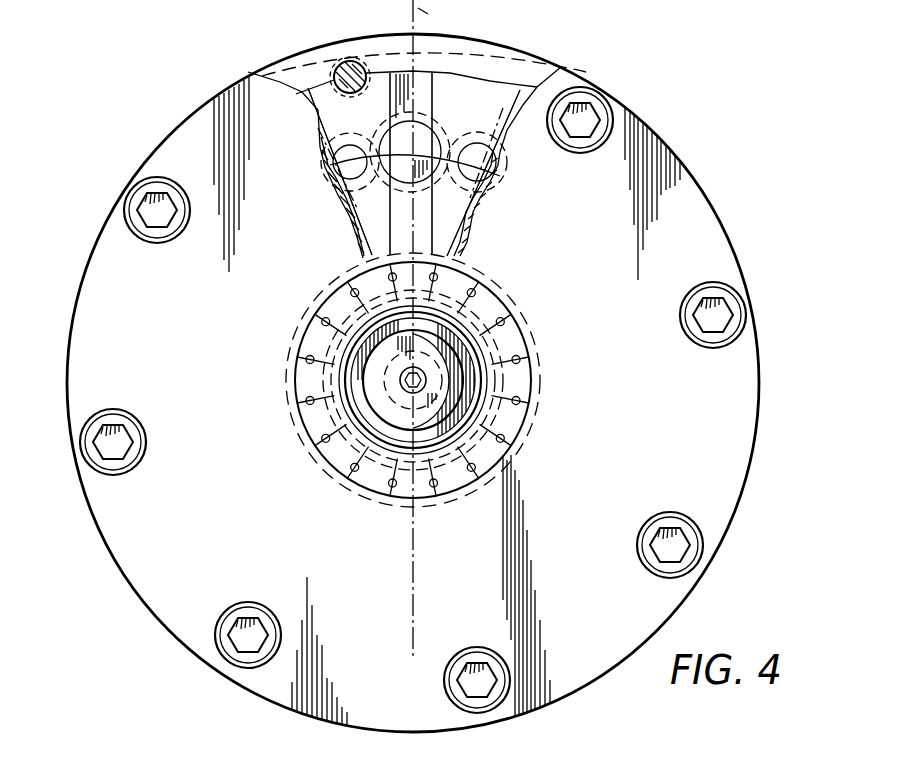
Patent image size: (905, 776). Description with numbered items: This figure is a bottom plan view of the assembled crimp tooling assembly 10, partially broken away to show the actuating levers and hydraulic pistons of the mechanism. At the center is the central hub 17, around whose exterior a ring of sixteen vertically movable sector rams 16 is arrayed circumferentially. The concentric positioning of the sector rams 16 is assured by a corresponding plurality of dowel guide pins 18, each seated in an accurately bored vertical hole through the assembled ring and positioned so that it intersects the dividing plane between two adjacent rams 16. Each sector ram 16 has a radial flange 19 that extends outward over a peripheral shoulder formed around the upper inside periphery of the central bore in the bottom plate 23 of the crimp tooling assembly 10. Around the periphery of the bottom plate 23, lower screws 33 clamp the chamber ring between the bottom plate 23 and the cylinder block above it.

The crimp tooling assembly 10 is at (705, 189).
The sector rams 16 is at (488, 292).
The central hub 17 is at (470, 372).
The dowel guide pins 18 is at (522, 396).
The radial flange 19 is at (362, 246).
The bottom plate 23 is at (233, 323).
The lower screws 33 is at (342, 68).